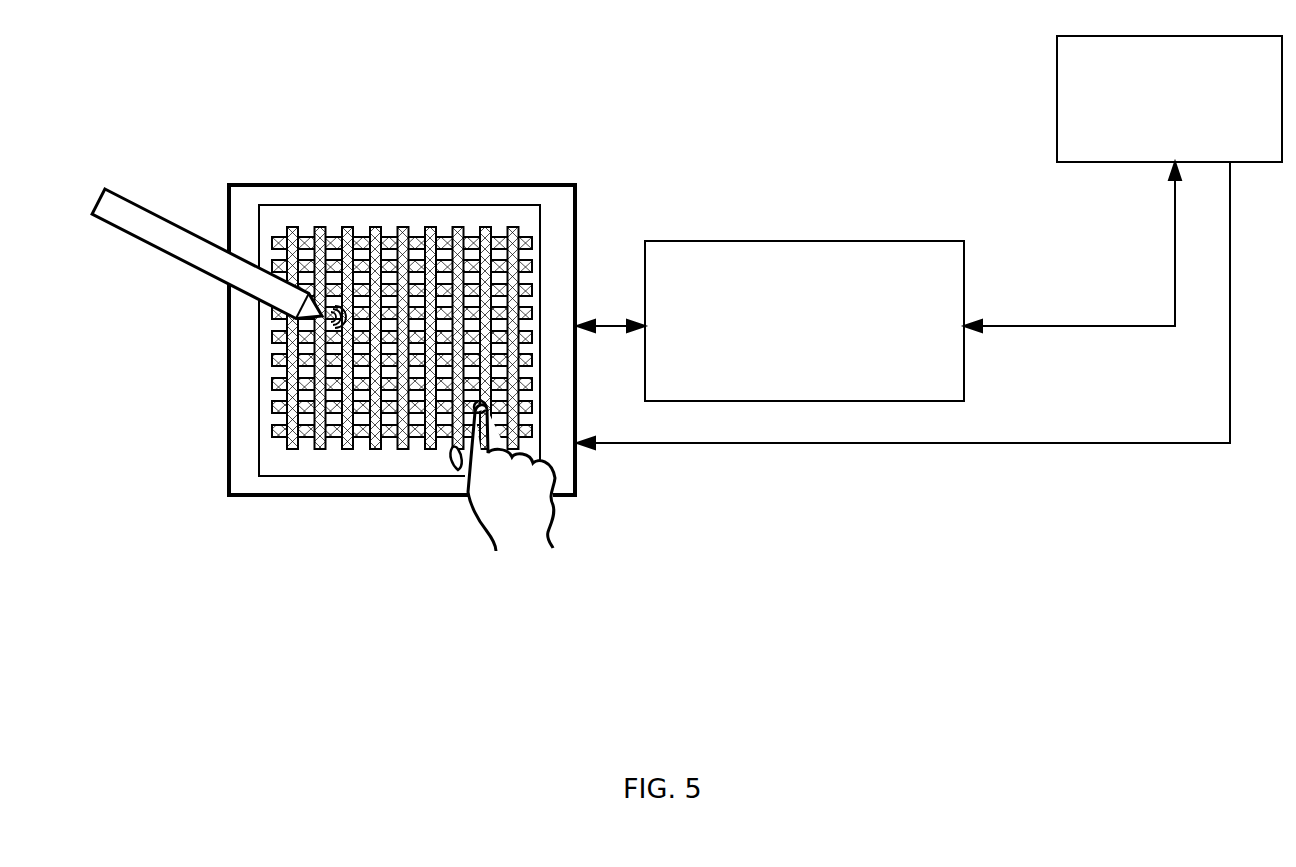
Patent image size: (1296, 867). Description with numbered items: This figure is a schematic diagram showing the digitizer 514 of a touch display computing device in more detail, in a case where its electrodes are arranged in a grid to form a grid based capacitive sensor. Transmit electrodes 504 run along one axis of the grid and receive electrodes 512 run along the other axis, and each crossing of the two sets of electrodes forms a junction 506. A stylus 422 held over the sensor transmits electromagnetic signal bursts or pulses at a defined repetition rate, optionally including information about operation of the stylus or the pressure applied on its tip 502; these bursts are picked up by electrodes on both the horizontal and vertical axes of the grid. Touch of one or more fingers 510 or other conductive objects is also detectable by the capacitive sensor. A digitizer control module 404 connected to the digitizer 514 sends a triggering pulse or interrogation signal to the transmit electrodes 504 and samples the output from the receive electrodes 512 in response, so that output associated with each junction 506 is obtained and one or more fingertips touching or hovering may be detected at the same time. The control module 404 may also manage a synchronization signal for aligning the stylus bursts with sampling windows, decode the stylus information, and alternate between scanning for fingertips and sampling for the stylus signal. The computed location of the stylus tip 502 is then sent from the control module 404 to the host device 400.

The host device 400 is at (1169, 99).
The digitizer control module 404 is at (804, 321).
The stylus 422 is at (183, 228).
The tip 502 is at (298, 320).
The transmit electrodes 504 is at (272, 360).
The junction 506 is at (375, 412).
The fingers 510 is at (475, 410).
The receive electrodes 512 is at (311, 319).
The digitizer 514 is at (578, 253).